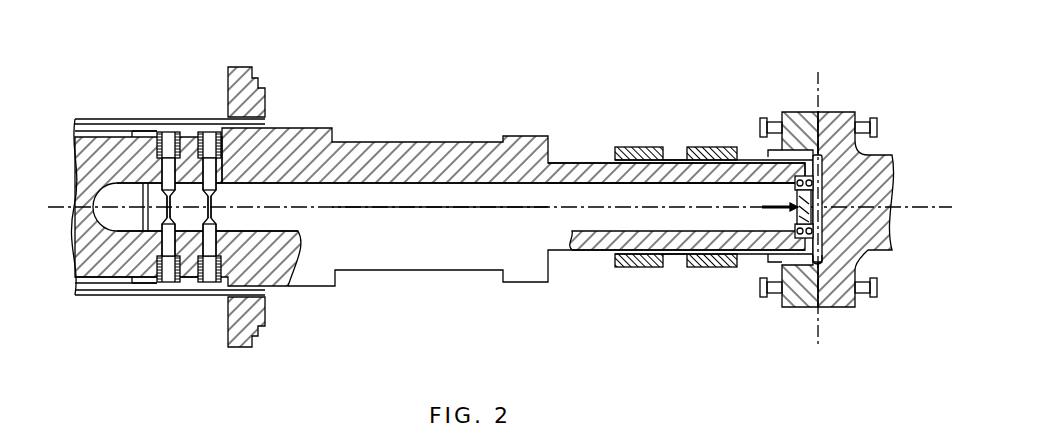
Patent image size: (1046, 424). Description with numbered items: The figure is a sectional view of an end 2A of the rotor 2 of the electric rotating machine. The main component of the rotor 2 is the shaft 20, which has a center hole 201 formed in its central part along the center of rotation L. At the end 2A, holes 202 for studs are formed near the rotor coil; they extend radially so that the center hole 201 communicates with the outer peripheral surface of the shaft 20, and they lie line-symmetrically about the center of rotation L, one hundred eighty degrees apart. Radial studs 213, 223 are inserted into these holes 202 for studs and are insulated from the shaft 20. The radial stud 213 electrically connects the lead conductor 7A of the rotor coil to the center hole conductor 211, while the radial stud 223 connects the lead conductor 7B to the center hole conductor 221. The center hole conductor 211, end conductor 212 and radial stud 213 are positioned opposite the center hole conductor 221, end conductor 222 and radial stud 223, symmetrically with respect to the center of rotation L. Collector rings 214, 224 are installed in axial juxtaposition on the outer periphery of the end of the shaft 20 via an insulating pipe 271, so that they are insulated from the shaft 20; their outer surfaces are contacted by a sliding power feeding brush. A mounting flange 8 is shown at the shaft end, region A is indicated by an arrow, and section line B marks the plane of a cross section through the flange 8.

The rotor 2 is at (430, 292).
The end 2A is at (595, 125).
The shaft 20 is at (412, 142).
The center hole 201 is at (116, 180).
The holes for studs 202 is at (248, 230).
The center hole conductor 211 is at (602, 193).
The center hole conductor 221 is at (605, 228).
The end conductor 212 is at (822, 165).
The end conductor 222 is at (822, 258).
The radial stud 213 is at (213, 170).
The radial stud 223 is at (213, 245).
The collector ring 214 is at (637, 147).
The collector ring 224 is at (712, 147).
The insulating pipe 271 is at (680, 160).
The lead conductor 7A is at (152, 132).
The lead conductor 7B is at (150, 283).
The mounting flange 8 is at (845, 112).
The region A is at (740, 290).
The section line B- B is at (826, 87).
The center of rotation L is at (905, 205).